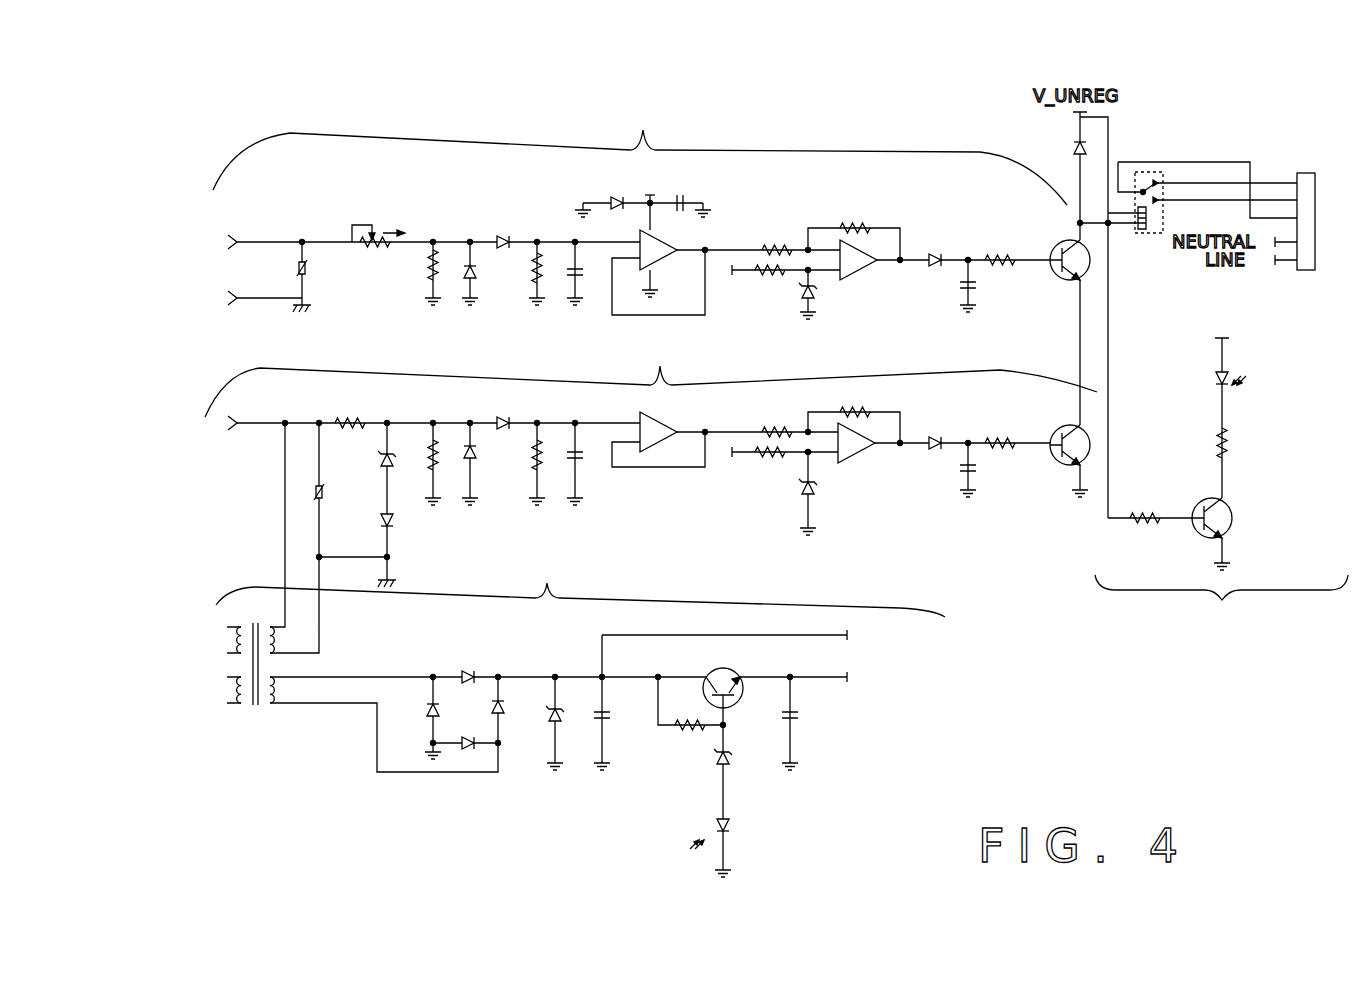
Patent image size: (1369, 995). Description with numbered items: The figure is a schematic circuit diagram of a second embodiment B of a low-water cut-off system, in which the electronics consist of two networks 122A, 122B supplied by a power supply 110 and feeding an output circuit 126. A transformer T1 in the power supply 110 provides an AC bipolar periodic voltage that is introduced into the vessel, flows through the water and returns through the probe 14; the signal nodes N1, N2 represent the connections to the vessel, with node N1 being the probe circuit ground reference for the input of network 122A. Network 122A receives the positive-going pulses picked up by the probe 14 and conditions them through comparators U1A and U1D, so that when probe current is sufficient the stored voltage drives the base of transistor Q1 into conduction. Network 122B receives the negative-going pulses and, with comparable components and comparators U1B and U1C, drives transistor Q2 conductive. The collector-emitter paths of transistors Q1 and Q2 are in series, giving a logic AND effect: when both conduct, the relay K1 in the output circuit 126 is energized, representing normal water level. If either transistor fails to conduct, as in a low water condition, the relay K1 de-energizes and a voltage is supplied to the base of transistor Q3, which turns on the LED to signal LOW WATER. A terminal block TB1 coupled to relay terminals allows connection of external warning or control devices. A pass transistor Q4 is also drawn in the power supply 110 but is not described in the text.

The probe 14 is at (248, 242).
The second embodiment B is at (362, 105).
The network 122A is at (640, 208).
The network 122B is at (651, 500).
The power supply 110 is at (580, 725).
The output circuit 126 is at (1225, 471).
The node N1 is at (305, 296).
The node N2 is at (390, 557).
The transformer T1 is at (250, 650).
The relay K1 is at (1163, 202).
The terminal block TB1 is at (1307, 236).
The transistor Q1 is at (1064, 268).
The transistor Q2 is at (1060, 461).
The transistor Q3 is at (1228, 528).
The transistor Q4 is at (716, 677).
The comparator U1A is at (668, 263).
The comparator U1B is at (671, 437).
The comparator U1C is at (870, 451).
The comparator U1D is at (872, 268).